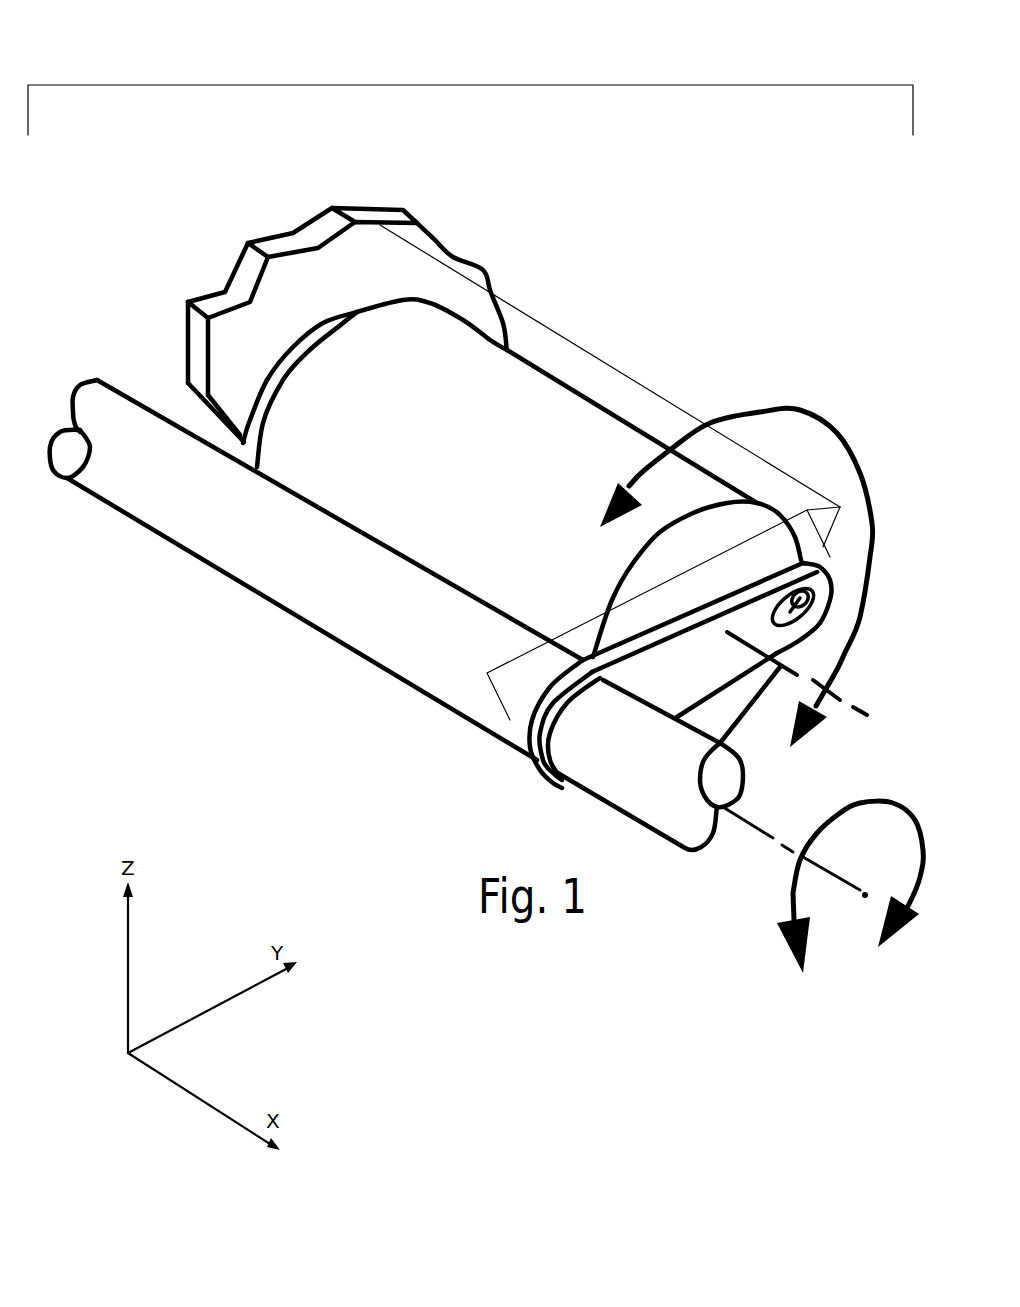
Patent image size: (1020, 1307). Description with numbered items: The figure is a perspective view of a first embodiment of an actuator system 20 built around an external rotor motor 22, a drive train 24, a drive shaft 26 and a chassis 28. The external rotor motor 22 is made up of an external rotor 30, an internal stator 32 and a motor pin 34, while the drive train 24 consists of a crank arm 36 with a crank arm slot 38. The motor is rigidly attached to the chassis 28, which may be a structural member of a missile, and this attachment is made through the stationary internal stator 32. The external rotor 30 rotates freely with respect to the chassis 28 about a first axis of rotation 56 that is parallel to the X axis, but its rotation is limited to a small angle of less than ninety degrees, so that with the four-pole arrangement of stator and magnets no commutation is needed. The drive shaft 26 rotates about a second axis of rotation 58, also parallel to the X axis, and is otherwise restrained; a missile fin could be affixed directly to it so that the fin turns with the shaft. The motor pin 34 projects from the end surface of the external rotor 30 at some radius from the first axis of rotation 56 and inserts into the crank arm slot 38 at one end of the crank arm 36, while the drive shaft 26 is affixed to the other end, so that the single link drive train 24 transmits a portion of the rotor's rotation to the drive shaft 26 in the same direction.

The actuator system 20 is at (438, 85).
The external rotor motor 22 is at (602, 358).
The drive train 24 is at (637, 597).
The drive shaft 26 is at (371, 610).
The chassis 28 is at (302, 272).
The external rotor 30 is at (514, 490).
The internal stator 32 is at (275, 383).
The motor pin 34 is at (793, 537).
The crank arm 36 is at (718, 671).
The crank arm slot 38 is at (777, 545).
The first axis of rotation 56 is at (788, 675).
The second axis of rotation 58 is at (760, 833).